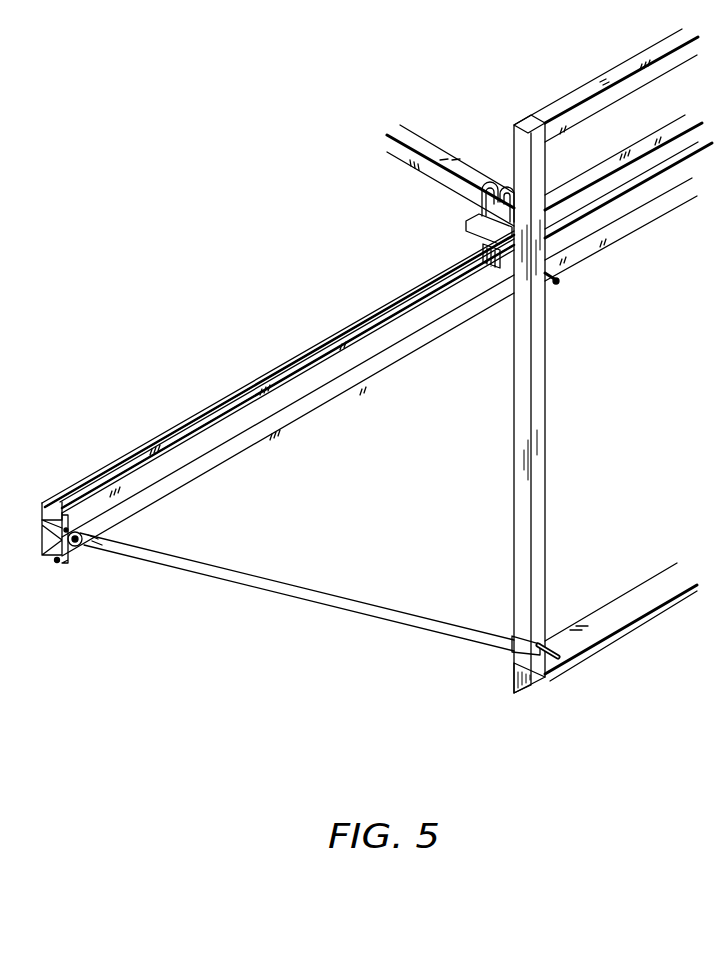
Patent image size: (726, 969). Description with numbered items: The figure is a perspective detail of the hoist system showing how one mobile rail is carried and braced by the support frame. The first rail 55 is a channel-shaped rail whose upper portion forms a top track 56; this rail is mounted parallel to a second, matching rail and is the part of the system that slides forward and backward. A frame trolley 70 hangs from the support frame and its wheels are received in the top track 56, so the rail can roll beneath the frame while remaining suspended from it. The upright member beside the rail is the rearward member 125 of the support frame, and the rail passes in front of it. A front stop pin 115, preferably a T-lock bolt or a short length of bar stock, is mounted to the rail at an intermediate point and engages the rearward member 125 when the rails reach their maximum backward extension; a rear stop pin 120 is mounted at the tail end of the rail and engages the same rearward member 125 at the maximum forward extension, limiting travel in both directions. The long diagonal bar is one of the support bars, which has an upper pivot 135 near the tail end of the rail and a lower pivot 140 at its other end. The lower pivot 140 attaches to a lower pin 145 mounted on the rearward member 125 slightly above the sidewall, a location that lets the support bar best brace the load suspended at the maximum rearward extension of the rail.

The first rail 55 is at (318, 389).
The top track 56 is at (268, 385).
The frame trolley 70 is at (470, 222).
The front stop pin 115 is at (556, 282).
The rear stop pin 120 is at (117, 553).
The rearward member 125 is at (535, 508).
The upper pivot 135 is at (82, 552).
The lower pivot 140 is at (530, 648).
The lower pin 145 is at (560, 650).